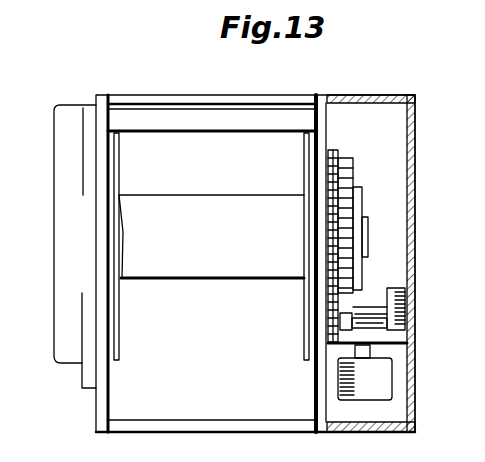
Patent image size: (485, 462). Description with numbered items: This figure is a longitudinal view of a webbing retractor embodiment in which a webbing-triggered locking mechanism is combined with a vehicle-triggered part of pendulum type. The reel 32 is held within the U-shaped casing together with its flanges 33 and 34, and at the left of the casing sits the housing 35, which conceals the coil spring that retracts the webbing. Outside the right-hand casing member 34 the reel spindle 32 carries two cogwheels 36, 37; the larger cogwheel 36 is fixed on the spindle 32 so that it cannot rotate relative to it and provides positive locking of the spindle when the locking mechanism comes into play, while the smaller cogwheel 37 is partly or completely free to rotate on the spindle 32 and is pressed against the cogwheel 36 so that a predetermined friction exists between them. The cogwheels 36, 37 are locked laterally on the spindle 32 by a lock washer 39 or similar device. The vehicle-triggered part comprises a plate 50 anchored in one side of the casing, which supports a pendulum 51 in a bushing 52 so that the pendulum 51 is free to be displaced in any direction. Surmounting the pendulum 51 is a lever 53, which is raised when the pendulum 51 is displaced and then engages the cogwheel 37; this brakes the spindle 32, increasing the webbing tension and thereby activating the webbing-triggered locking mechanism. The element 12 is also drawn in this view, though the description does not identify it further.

The shaft 12 is at (368, 240).
The reel 32 is at (195, 268).
The flange 33 is at (119, 343).
The flange 34 is at (304, 340).
The housing 35 is at (65, 212).
The cogwheel 36 is at (328, 157).
The cogwheel 37 is at (350, 175).
The lock washer 39 is at (362, 202).
The plate 50 is at (388, 333).
The pendulum 51 is at (375, 380).
The bushing 52 is at (395, 308).
The lever 53 is at (340, 307).